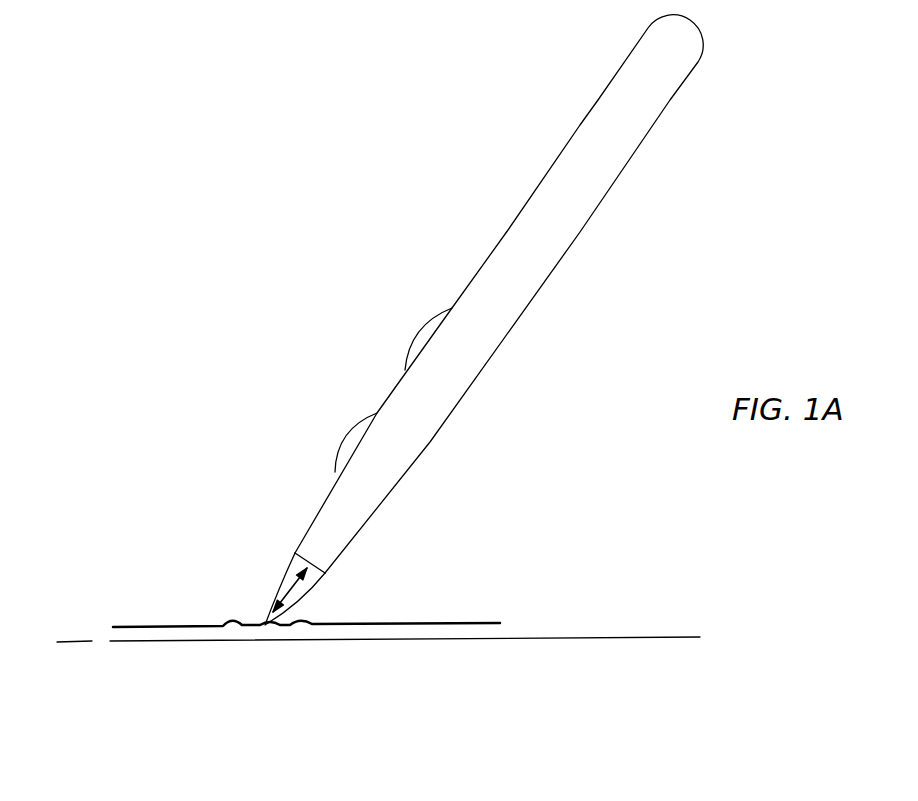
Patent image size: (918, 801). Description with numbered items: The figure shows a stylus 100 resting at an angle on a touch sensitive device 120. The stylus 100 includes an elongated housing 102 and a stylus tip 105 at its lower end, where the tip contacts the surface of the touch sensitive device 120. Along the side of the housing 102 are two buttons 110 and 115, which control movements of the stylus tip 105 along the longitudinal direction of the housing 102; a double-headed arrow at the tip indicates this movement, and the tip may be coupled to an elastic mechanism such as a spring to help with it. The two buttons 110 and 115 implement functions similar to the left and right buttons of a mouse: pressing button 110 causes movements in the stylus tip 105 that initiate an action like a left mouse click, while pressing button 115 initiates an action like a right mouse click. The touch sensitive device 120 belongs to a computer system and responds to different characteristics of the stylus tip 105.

The stylus 100 is at (484, 380).
The housing 102 is at (552, 165).
The stylus tip 105 is at (312, 590).
The button 110 is at (415, 338).
The button 115 is at (358, 417).
The touch sensitive device 120 is at (442, 623).